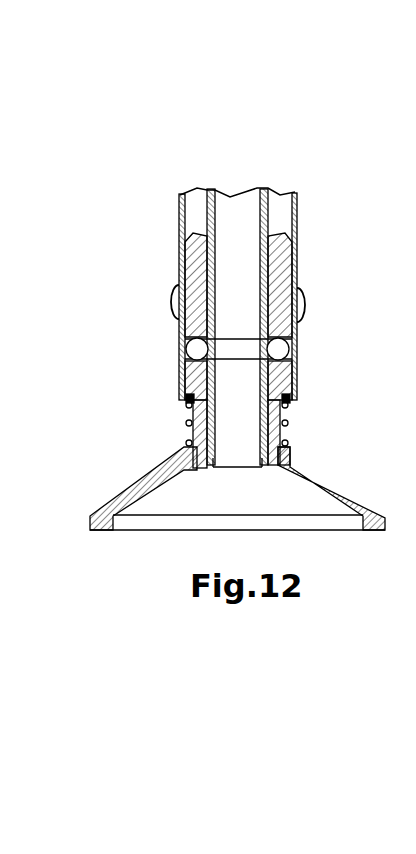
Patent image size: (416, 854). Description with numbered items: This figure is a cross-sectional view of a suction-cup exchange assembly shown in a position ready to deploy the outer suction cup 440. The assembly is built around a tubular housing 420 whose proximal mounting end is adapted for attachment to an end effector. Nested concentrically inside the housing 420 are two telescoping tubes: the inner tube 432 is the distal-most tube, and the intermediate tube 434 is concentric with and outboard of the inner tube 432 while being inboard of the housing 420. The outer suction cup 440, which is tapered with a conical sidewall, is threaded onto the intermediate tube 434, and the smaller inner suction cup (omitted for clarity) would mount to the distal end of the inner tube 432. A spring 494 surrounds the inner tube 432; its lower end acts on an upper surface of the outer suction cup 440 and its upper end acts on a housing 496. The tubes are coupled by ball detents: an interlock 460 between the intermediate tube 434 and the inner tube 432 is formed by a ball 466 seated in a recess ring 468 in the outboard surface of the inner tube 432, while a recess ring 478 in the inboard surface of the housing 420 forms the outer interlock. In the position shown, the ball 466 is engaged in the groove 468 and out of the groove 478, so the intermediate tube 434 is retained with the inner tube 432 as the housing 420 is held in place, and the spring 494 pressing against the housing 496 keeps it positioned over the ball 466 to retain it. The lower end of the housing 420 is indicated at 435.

The tubular housing 420 is at (297, 213).
The inner tube 432 is at (297, 250).
The intermediate tube 434 is at (195, 253).
The recess ring 478 is at (190, 288).
The interlock 460 is at (304, 300).
The recess ring 468 is at (240, 352).
The ball 466 is at (278, 349).
The housing 496 is at (178, 370).
The tube end seal 435 is at (293, 405).
The spring 494 is at (287, 423).
The outer suction cup 440 is at (132, 495).